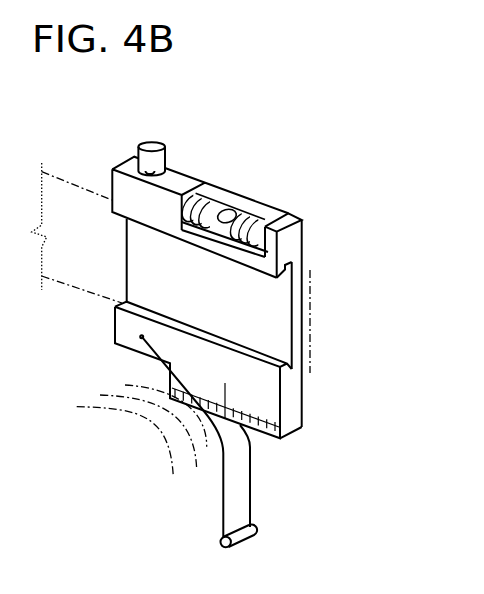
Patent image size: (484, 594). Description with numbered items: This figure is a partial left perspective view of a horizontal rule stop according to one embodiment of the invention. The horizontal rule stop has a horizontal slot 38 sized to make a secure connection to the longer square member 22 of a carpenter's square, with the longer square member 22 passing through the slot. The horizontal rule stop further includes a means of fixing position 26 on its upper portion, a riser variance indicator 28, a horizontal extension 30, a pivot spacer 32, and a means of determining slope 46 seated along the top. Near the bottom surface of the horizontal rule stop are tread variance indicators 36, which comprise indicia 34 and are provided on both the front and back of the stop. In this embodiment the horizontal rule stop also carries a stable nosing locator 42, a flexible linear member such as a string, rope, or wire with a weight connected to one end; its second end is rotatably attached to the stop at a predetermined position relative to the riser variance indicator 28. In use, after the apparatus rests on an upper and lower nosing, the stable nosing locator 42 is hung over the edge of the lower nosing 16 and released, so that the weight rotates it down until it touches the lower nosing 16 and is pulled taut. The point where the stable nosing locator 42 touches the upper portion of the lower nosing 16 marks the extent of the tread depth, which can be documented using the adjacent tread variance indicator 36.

The lower nosing 16 is at (153, 438).
The longer square member 22 is at (67, 285).
The means of fixing position 26 is at (152, 145).
The riser variance indicator 28 is at (307, 143).
The horizontal extension 30 is at (153, 275).
The pivot spacer 32 is at (293, 400).
The indicia 34 is at (225, 393).
The tread variance indicator 36 is at (287, 460).
The horizontal slot 38 is at (127, 265).
The stable nosing locator 42 is at (250, 497).
The means of determining slope 46 is at (238, 210).